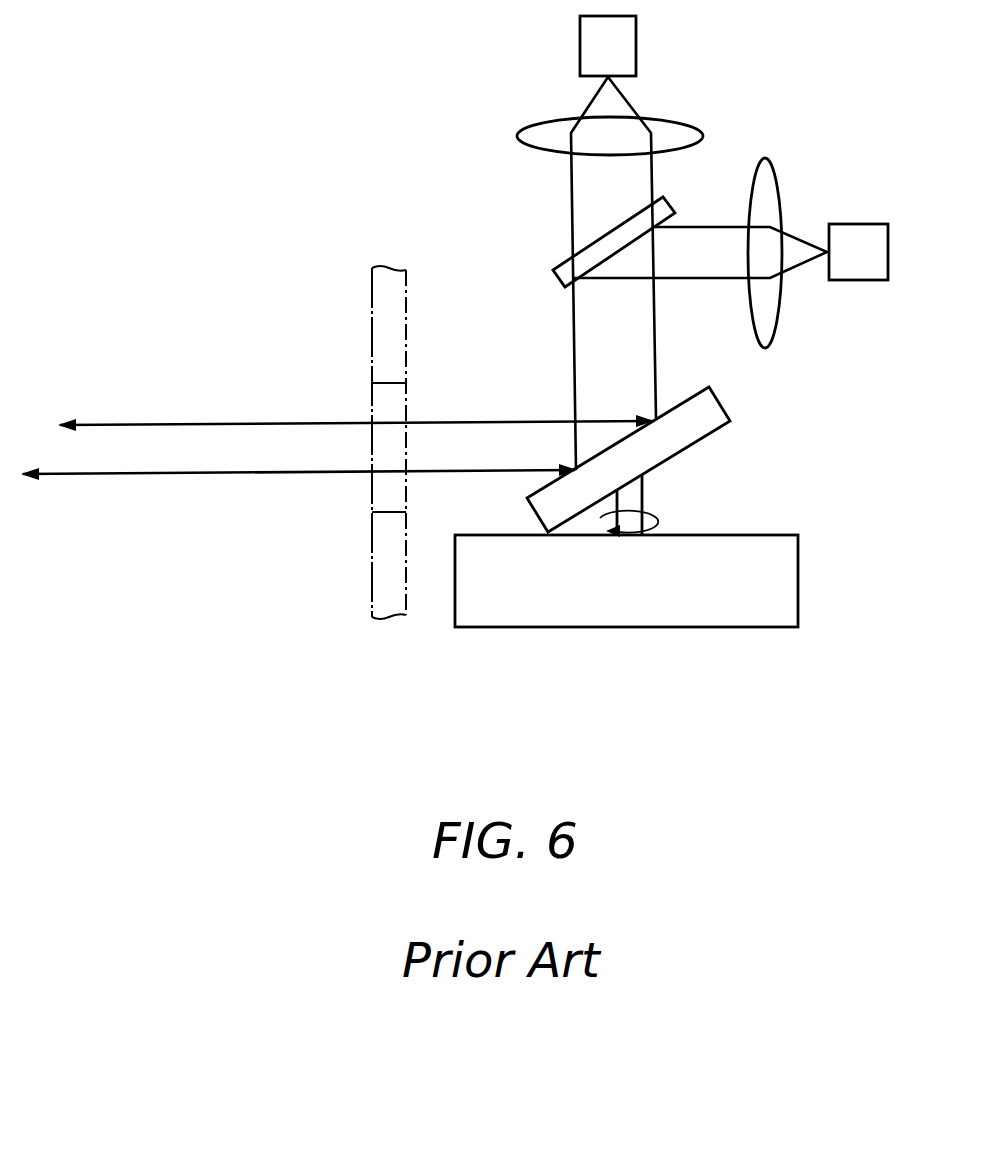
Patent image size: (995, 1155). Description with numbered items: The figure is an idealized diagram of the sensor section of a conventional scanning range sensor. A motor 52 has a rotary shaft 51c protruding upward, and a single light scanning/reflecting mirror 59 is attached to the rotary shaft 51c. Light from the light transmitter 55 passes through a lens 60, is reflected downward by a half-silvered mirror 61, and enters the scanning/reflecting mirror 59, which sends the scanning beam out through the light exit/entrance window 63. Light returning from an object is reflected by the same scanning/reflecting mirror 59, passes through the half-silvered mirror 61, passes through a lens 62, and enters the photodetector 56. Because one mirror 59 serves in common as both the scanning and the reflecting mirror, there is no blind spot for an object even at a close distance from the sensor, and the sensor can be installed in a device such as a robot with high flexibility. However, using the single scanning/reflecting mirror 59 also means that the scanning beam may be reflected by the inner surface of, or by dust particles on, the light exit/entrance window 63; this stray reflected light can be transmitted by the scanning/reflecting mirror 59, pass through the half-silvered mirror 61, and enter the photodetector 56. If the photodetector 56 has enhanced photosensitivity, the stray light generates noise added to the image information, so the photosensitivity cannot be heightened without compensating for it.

The photodetector 56 is at (636, 42).
The lens 62 is at (530, 127).
The half-silvered mirror 61 is at (557, 268).
The lens 60 is at (764, 158).
The light transmitter 55 is at (860, 224).
The scanning/reflecting mirror 59 is at (723, 400).
The rotary shaft 51c is at (642, 487).
The motor 52 is at (798, 578).
The light exit/entrance window 63 is at (372, 492).